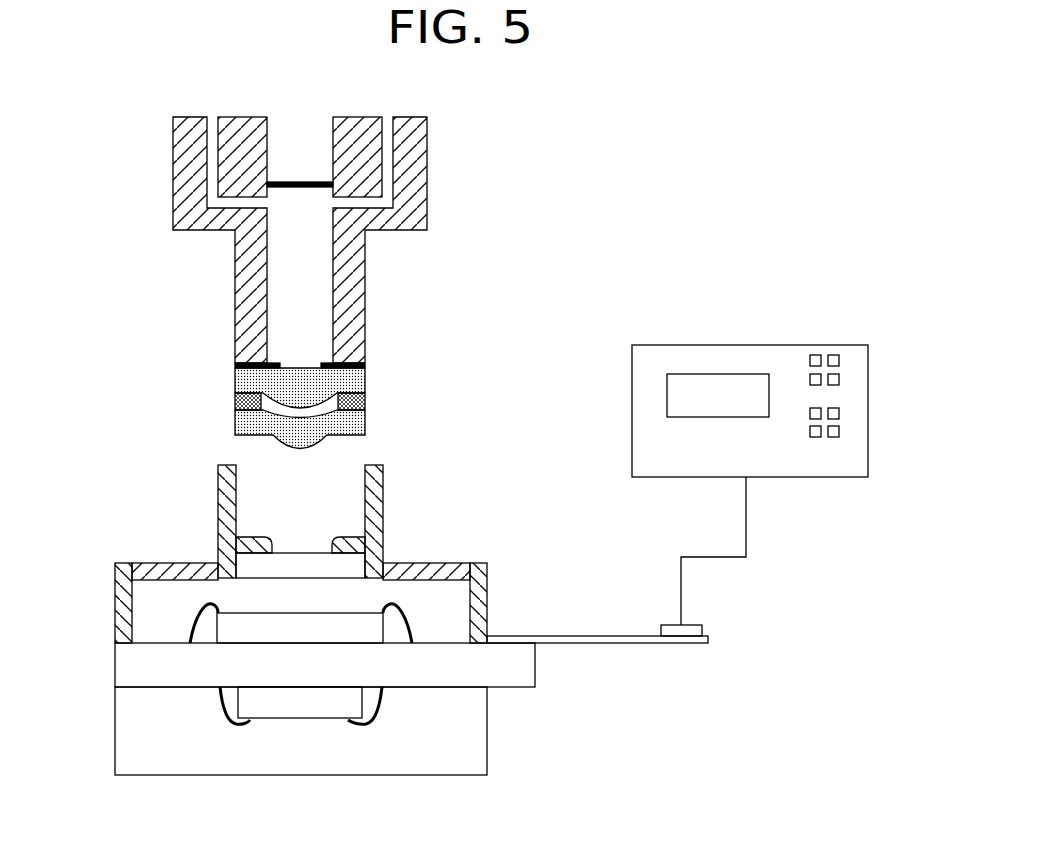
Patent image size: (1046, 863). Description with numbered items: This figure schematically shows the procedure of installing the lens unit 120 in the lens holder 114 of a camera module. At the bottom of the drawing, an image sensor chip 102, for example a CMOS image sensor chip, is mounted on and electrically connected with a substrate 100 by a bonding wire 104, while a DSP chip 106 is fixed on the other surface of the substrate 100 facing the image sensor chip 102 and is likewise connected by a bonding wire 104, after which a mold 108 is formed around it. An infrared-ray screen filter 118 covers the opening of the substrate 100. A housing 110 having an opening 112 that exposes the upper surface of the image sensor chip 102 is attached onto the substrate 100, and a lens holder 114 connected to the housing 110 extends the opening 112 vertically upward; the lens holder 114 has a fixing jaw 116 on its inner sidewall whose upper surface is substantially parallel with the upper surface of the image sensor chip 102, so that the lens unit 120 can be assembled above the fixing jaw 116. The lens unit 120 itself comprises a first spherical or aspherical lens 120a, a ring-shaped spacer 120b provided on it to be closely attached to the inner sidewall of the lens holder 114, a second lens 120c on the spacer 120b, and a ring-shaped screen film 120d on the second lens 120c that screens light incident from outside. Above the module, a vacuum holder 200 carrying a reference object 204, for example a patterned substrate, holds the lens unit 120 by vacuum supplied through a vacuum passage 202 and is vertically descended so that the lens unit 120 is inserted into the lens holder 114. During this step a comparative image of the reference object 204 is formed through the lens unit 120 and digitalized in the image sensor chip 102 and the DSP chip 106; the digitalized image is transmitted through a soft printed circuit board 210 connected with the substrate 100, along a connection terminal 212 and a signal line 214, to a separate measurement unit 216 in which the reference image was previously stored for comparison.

The substrate 100 is at (125, 663).
The image sensor chip 102 is at (222, 626).
The bonding wire 104 is at (205, 607).
The DSP chip 106 is at (247, 702).
The mold 108 is at (120, 752).
The housing 110 is at (125, 573).
The opening 112 is at (368, 562).
The lens holder 114 is at (380, 494).
The fixing jaw 116 is at (353, 543).
The infrared-ray screen filter 118 is at (247, 567).
The lens unit 120 is at (379, 397).
The first lens 120a is at (357, 425).
The spacer 120b is at (360, 404).
The second lens 120c is at (365, 383).
The screen film 120d is at (365, 366).
The vacuum holder 200 is at (418, 220).
The vacuum passage 202 is at (213, 125).
The reference object 204 is at (298, 180).
The soft printed circuit board 210 is at (608, 643).
The connection terminal 212 is at (702, 631).
The signal line 214 is at (748, 522).
The measurement unit 216 is at (750, 345).